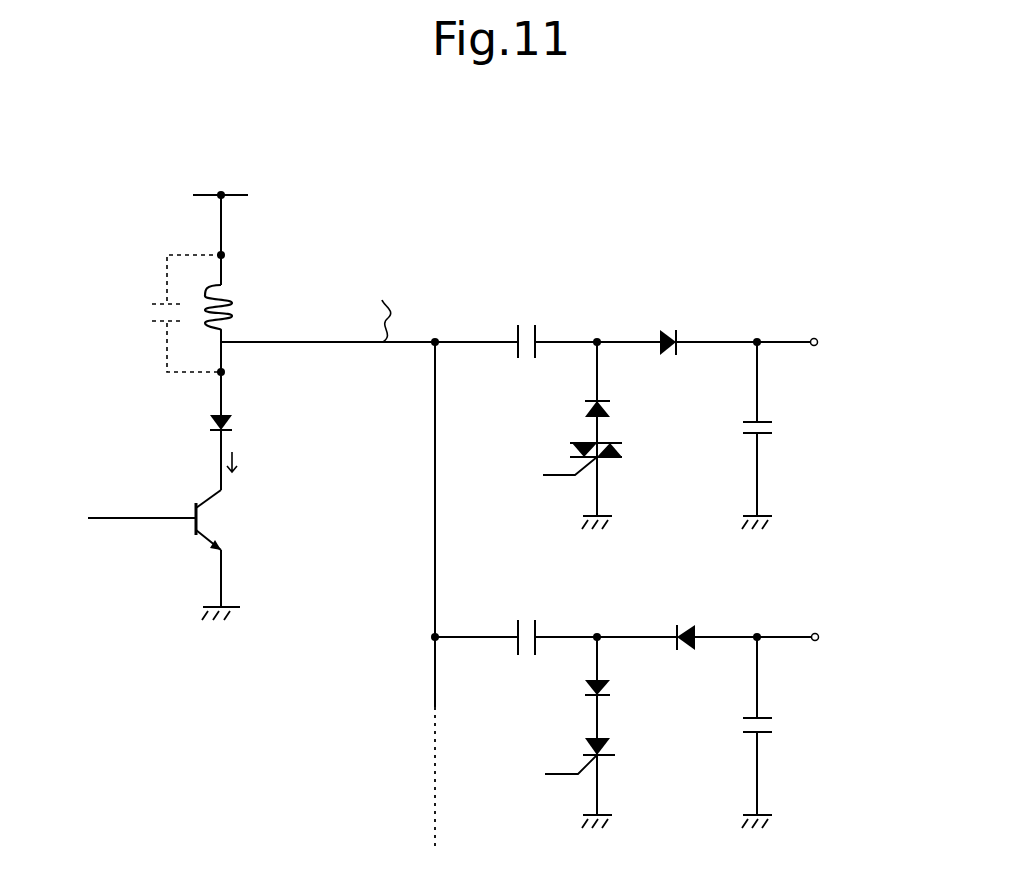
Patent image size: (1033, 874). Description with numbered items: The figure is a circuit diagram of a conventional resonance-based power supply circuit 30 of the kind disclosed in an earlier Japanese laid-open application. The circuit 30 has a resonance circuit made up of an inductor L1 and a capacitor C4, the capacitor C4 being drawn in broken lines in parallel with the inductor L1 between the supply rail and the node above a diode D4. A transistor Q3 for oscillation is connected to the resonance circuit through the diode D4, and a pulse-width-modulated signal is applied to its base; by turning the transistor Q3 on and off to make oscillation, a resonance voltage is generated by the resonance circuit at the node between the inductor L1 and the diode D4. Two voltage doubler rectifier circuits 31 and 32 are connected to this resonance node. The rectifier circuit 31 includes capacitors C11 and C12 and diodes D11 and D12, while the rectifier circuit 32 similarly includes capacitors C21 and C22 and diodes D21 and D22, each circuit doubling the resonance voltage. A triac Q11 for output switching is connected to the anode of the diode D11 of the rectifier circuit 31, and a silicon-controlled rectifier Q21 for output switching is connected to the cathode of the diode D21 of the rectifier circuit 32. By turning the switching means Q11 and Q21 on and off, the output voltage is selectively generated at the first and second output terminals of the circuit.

The resonance-based power supply circuit 30 is at (472, 133).
The voltage doubler rectifier circuit 31 is at (727, 264).
The voltage doubler rectifier circuit 32 is at (751, 598).
The inductor L1 is at (234, 307).
The capacitor C4 is at (159, 313).
The diode D4 is at (244, 410).
The transistor for oscillation Q3 is at (175, 548).
The capacitor C11 is at (523, 316).
The diode D12 is at (669, 315).
The diode D11 is at (625, 405).
The triac Q11 is at (609, 459).
The capacitor C12 is at (783, 429).
The capacitor C21 is at (523, 622).
The diode D22 is at (684, 620).
The diode D21 is at (632, 694).
The silicon-controlled rectifier Q21 is at (612, 756).
The capacitor C22 is at (783, 726).